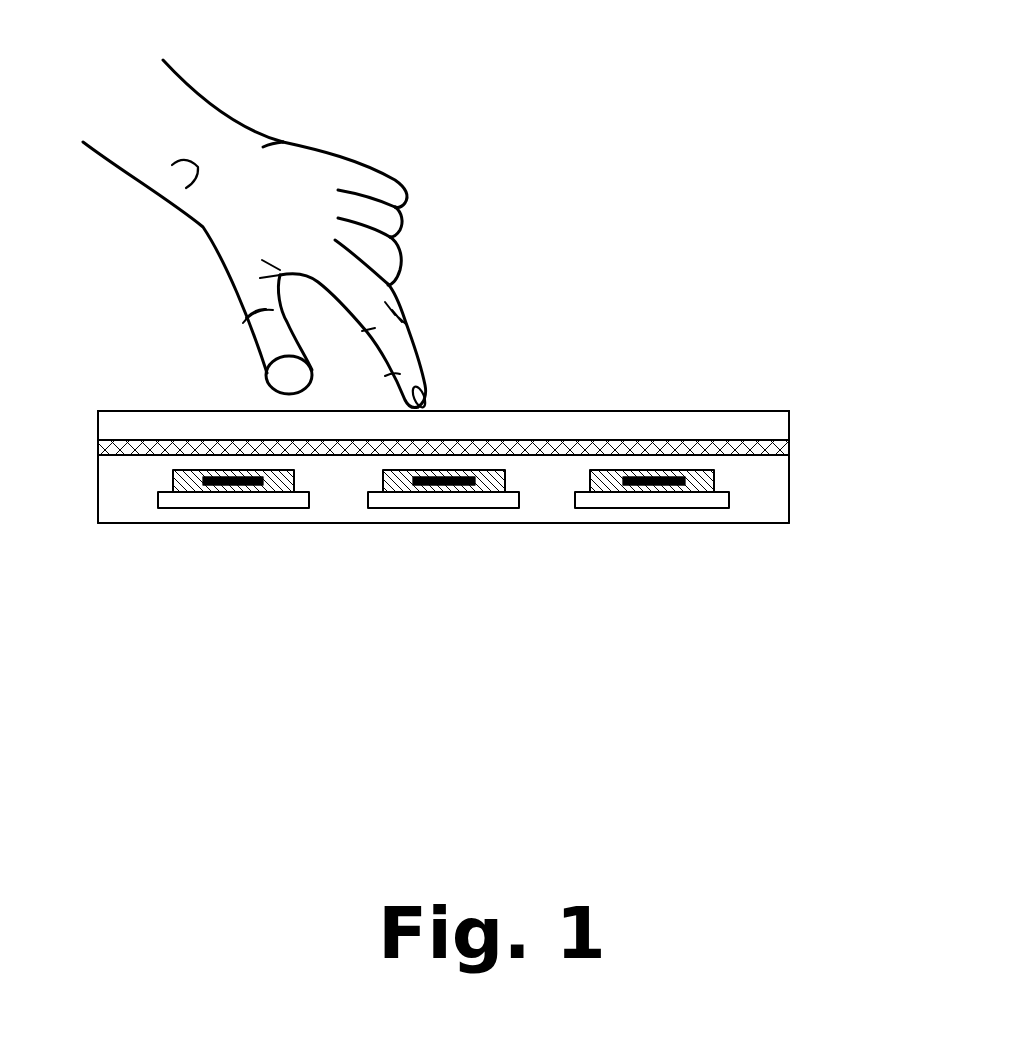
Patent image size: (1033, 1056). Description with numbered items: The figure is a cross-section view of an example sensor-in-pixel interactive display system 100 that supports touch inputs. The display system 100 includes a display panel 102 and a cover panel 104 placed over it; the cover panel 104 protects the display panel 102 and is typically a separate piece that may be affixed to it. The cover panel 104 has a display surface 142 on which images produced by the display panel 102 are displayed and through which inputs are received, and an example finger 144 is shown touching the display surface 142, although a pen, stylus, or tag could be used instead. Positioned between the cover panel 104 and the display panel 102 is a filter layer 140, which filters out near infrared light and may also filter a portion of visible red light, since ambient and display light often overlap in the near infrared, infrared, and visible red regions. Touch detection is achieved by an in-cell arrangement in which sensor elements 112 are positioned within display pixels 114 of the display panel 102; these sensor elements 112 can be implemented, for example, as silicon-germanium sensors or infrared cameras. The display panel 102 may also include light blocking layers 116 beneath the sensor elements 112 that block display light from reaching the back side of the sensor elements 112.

The SIP interactive display system 100 is at (790, 305).
The display panel 102 is at (790, 491).
The cover panel 104 is at (790, 411).
The sensor elements 112 is at (460, 484).
The display pixels 114 is at (399, 484).
The light blocking layers 116 is at (503, 500).
The filter layer 140 is at (790, 452).
The display surface 142 is at (492, 407).
The finger 144 is at (425, 345).